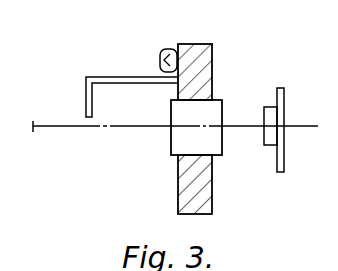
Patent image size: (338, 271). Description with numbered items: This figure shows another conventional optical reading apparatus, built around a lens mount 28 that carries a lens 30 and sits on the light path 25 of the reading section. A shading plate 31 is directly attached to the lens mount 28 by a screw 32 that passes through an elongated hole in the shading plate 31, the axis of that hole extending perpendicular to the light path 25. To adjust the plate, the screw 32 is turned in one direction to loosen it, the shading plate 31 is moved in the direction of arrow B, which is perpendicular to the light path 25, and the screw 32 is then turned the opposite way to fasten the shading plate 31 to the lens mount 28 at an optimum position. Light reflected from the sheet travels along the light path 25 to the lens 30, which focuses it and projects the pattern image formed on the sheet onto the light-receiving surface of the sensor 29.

The light path 25 is at (147, 127).
The lens mount 28 is at (198, 44).
The sensor 29 is at (268, 107).
The lens 30 is at (215, 110).
The shading plate 31 is at (98, 77).
The screw 32 is at (163, 49).
The arrow B is at (78, 82).